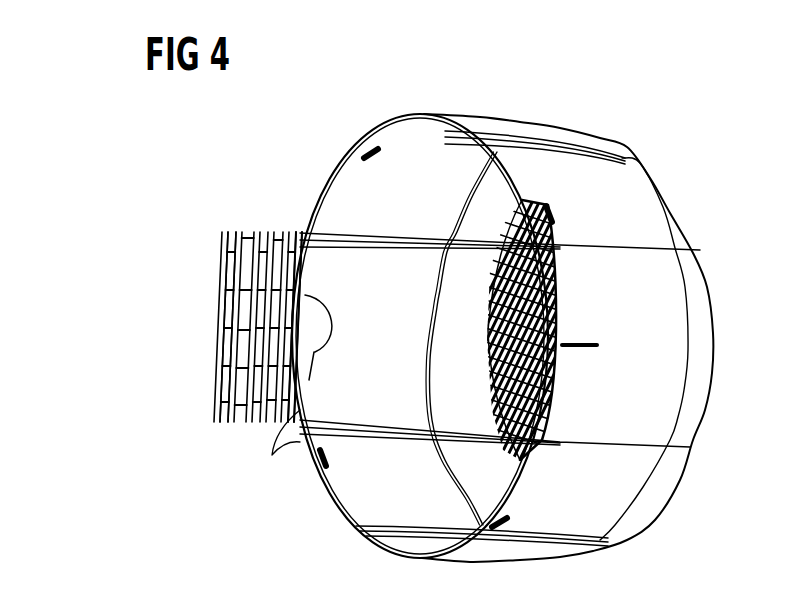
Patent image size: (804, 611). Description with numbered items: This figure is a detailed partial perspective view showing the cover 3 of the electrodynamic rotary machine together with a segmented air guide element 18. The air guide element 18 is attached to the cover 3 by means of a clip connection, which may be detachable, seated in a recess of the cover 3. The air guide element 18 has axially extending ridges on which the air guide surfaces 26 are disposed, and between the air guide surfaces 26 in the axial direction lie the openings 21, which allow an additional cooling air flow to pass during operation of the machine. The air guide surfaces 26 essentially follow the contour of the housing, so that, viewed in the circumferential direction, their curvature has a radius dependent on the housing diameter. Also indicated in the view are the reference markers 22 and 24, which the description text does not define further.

The cover 3 is at (512, 112).
The air guide element 18 is at (238, 263).
The openings 21 is at (294, 228).
The ring assembly 22 is at (300, 229).
The clip 24 is at (293, 443).
The air guide surfaces 26 is at (268, 403).